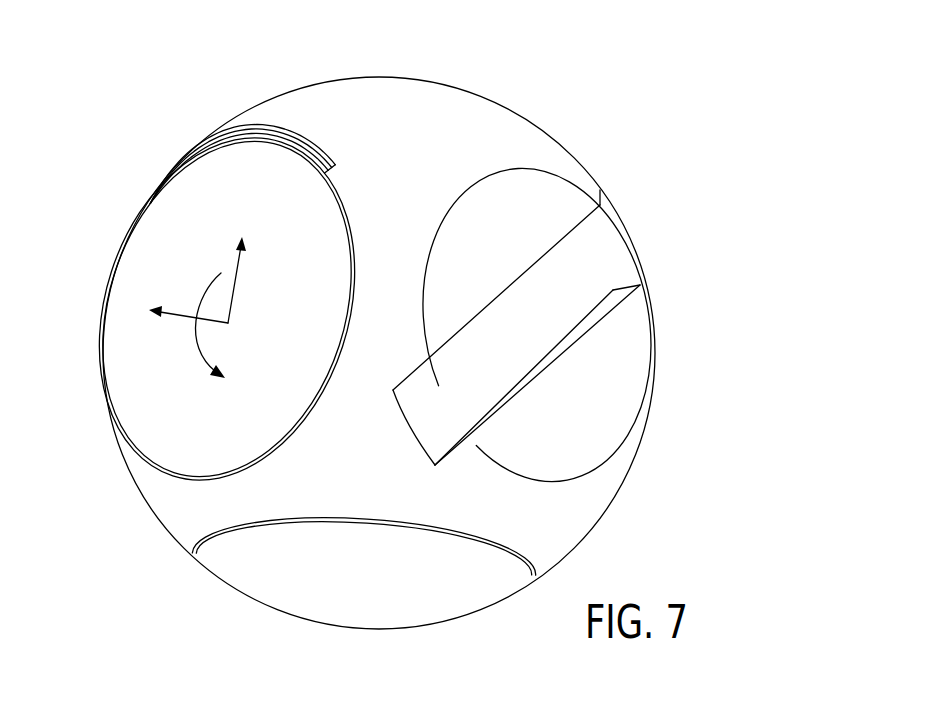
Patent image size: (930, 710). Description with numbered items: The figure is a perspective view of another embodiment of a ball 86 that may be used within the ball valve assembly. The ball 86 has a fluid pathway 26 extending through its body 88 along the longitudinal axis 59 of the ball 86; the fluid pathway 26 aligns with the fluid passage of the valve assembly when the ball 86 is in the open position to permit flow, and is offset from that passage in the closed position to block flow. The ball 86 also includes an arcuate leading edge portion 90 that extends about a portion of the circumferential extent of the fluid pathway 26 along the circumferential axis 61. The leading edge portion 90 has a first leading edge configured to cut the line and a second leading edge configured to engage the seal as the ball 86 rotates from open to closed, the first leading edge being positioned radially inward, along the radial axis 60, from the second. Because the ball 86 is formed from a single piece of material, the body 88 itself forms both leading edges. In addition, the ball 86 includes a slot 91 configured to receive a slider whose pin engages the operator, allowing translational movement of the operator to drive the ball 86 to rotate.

The ball 86 is at (516, 94).
The body 88 is at (508, 147).
The slot 91 is at (613, 298).
The fluid pathway 26 is at (137, 404).
The leading edge portion 90 is at (251, 162).
The longitudinal axis 59 is at (212, 322).
The radial axis 60 is at (233, 290).
The circumferential axis 61 is at (197, 352).